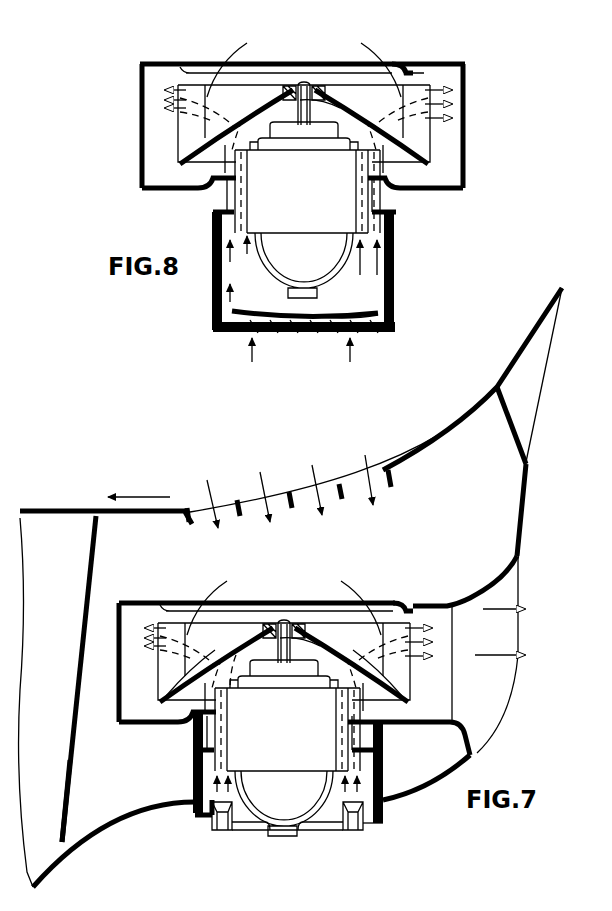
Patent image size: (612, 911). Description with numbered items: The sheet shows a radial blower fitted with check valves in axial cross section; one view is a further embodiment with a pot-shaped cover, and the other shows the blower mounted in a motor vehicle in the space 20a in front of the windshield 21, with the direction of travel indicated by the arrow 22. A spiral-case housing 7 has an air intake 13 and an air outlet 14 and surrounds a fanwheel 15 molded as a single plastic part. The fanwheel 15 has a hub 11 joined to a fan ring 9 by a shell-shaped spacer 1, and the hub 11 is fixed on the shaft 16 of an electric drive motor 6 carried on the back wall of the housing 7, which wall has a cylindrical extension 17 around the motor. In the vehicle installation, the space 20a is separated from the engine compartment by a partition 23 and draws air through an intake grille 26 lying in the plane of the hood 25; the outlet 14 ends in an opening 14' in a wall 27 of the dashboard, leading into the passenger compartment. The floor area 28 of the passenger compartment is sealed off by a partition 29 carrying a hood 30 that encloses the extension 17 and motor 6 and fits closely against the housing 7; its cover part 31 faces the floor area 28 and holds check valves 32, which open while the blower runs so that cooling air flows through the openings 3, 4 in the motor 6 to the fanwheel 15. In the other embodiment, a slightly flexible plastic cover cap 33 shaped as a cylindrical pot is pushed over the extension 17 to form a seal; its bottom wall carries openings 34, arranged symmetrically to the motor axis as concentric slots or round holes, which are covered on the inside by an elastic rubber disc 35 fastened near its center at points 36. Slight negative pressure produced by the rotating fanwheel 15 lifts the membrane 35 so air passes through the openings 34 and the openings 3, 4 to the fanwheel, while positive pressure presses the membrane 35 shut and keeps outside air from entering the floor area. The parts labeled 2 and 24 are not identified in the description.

In FIG. 7, the spacer 1 is at (250, 648).
In FIG. 7, the impeller blades 2 is at (224, 672).
In FIG. 8, the opening 3 is at (392, 230).
In FIG. 7, the opening 3 is at (372, 778).
In FIG. 8, the opening 4 is at (355, 218).
In FIG. 7, the opening 4 is at (336, 770).
In FIG. 8, the electric drive motor 6 is at (338, 275).
In FIG. 7, the electric drive motor 6 is at (320, 822).
In FIG. 8, the housing 7 is at (140, 177).
In FIG. 7, the housing 7 is at (117, 668).
In FIG. 8, the fan ring 9 is at (188, 140).
In FIG. 7, the fan ring 9 is at (162, 685).
In FIG. 8, the hub 11 is at (292, 86).
In FIG. 7, the hub 11 is at (268, 620).
In FIG. 8, the air intake 13 is at (399, 72).
In FIG. 7, the air intake 13 is at (394, 605).
In FIG. 7, the air outlet 14 is at (488, 663).
In FIG. 7, the opening 14' is at (514, 607).
In FIG. 8, the fanwheel 15 is at (340, 95).
In FIG. 7, the fanwheel 15 is at (325, 623).
In FIG. 7, the shaft 16 is at (286, 620).
In FIG. 8, the cylindrical extension 17 is at (218, 212).
In FIG. 7, the cylindrical extension 17 is at (207, 752).
In FIG. 7, the space 20a is at (507, 498).
In FIG. 7, the windshield 21 is at (520, 358).
In FIG. 7, the arrow 22 is at (170, 496).
In FIG. 7, the partition 23 is at (98, 545).
In FIG. 7, the top plate 24 is at (88, 512).
In FIG. 7, the hood 25 is at (55, 511).
In FIG. 7, the intake grille 26 is at (340, 466).
In FIG. 7, the wall 27 is at (520, 544).
In FIG. 7, the floor area 28 is at (62, 820).
In FIG. 7, the partition 29 is at (100, 818).
In FIG. 7, the hood 30 is at (196, 788).
In FIG. 7, the cover part 31 is at (240, 832).
In FIG. 7, the check valves 32 is at (214, 833).
In FIG. 8, the cover cap 33 is at (215, 308).
In FIG. 8, the openings 34 is at (348, 336).
In FIG. 8, the rubber disc 35 is at (243, 310).
In FIG. 8, the fastening points 36 is at (308, 315).